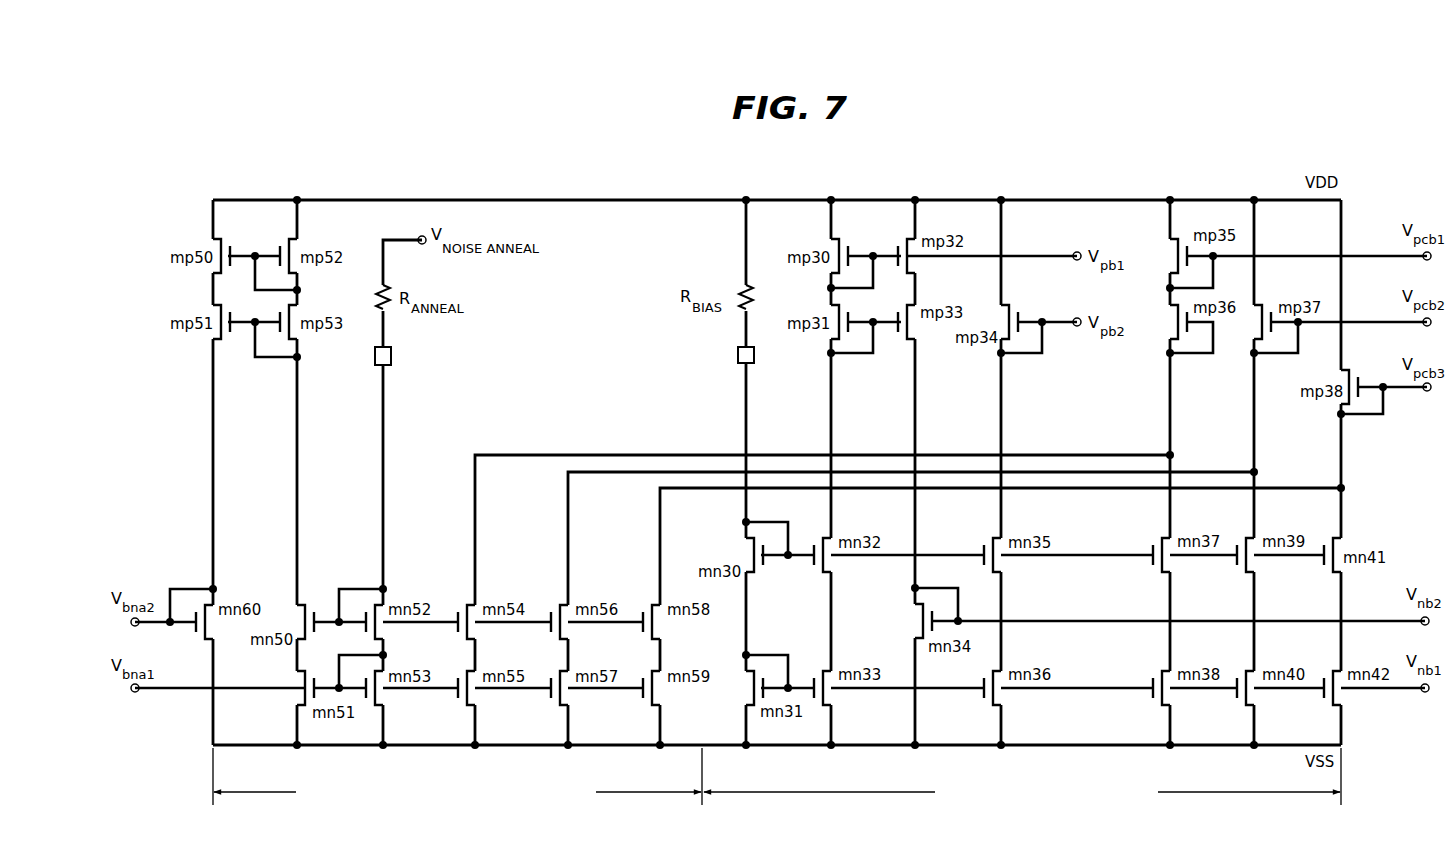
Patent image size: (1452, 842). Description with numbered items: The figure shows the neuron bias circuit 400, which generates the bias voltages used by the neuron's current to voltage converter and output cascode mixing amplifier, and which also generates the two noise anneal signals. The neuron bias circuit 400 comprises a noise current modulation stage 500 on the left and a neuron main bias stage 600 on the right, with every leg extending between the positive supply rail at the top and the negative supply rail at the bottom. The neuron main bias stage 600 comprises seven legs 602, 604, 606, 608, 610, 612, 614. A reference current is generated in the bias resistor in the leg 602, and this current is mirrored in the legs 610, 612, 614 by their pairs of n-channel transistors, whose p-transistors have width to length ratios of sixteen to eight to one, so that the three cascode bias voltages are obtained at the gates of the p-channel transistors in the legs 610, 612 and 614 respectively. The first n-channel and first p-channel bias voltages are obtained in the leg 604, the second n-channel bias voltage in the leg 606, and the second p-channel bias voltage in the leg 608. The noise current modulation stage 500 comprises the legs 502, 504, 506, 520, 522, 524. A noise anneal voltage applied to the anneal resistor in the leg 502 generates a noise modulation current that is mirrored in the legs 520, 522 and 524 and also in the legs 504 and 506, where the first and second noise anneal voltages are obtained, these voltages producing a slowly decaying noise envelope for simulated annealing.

The neuron bias circuit 400 is at (397, 172).
The noise current modulation stage 500 is at (457, 776).
The leg 502 is at (385, 447).
The leg 504 is at (299, 447).
The leg 506 is at (215, 447).
The leg 520 is at (477, 513).
The leg 522 is at (570, 527).
The leg 524 is at (662, 528).
The neuron main bias stage 600 is at (1022, 776).
The leg 602 is at (745, 192).
The leg 604 is at (829, 192).
The leg 606 is at (913, 192).
The leg 608 is at (999, 192).
The leg 610 is at (1168, 192).
The leg 612 is at (1252, 192).
The leg 614 is at (1352, 192).